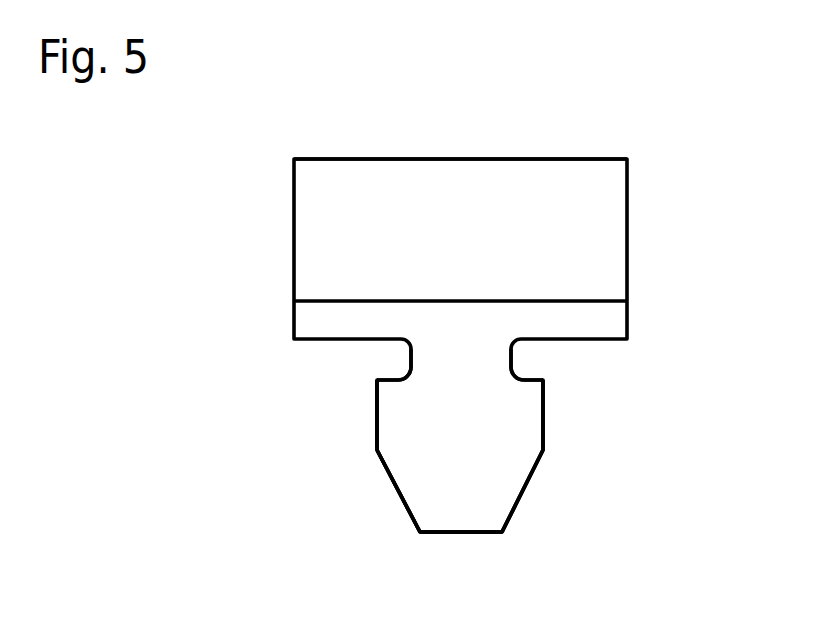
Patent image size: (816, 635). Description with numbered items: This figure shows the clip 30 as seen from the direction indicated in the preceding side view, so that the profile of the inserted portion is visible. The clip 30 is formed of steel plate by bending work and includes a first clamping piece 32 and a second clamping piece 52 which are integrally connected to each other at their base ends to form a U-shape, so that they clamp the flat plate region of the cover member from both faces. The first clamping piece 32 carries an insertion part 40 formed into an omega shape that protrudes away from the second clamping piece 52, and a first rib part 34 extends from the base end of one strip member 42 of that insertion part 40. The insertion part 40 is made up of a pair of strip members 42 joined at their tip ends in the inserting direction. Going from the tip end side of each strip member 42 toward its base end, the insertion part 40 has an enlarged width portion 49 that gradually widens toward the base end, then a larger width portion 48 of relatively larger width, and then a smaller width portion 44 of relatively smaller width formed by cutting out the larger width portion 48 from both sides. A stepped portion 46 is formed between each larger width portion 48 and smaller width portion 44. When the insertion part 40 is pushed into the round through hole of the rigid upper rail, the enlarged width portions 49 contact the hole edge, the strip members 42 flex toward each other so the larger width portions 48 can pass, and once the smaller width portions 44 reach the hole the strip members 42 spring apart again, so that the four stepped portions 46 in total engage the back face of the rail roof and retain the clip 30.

The clip 30 is at (675, 132).
The second clamping piece 52 is at (552, 158).
The first clamping piece 32 is at (345, 313).
The first rib part 34 is at (578, 315).
The smaller width portion 44 is at (462, 359).
The stepped portion 46 is at (390, 376).
The larger width portion 48 is at (450, 425).
The enlarged width portion 49 is at (430, 475).
The strip member 42 is at (457, 505).
The insertion part 40 is at (568, 505).